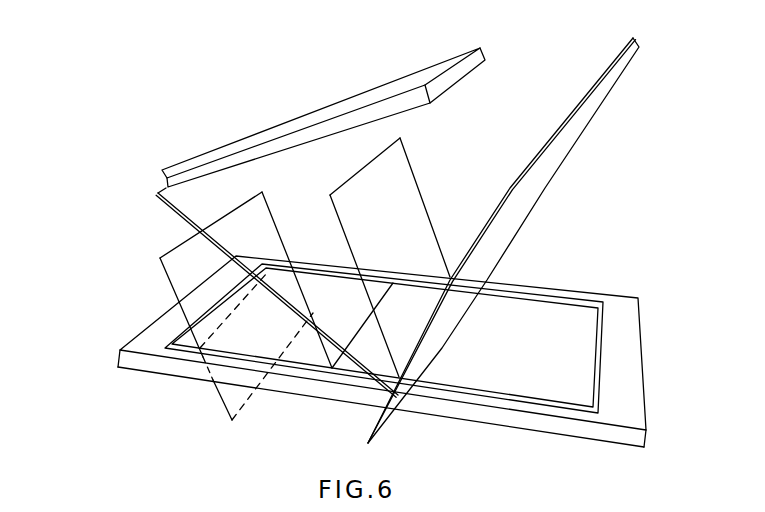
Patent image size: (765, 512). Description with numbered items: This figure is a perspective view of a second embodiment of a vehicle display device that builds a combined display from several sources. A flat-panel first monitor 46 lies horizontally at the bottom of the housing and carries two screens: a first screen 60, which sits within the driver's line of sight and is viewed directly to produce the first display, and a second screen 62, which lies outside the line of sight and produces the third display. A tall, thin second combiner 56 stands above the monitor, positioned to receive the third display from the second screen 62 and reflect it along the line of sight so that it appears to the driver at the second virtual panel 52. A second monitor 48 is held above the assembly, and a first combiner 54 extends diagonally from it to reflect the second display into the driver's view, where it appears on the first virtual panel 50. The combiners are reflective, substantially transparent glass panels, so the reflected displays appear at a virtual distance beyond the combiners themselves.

The first monitor 46 is at (140, 328).
The second monitor 48 is at (347, 92).
The first virtual panel 50 is at (222, 397).
The second virtual panel 52 is at (423, 200).
The first combiner 54 is at (160, 197).
The second combiner 56 is at (598, 73).
The first screen 60 is at (308, 355).
The second screen 62 is at (535, 363).